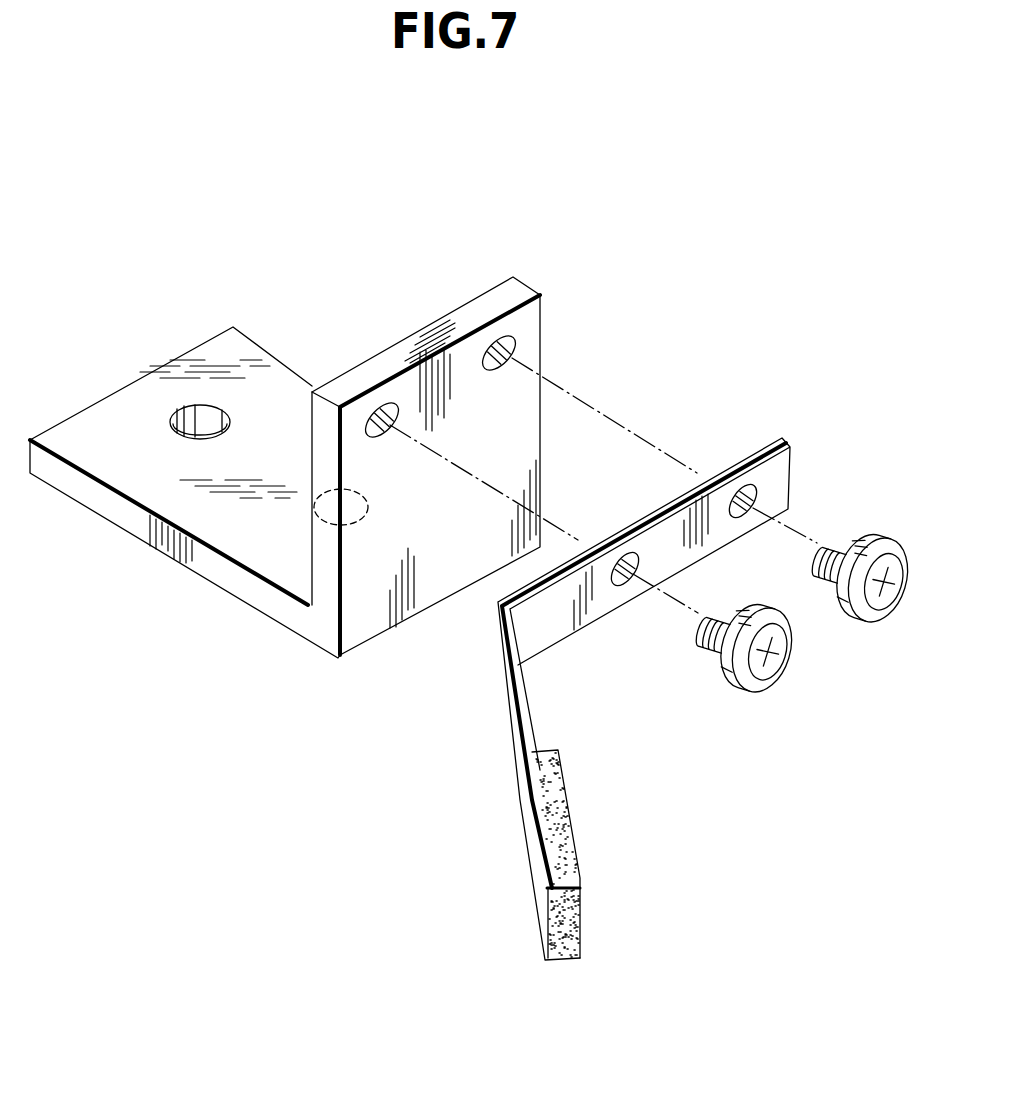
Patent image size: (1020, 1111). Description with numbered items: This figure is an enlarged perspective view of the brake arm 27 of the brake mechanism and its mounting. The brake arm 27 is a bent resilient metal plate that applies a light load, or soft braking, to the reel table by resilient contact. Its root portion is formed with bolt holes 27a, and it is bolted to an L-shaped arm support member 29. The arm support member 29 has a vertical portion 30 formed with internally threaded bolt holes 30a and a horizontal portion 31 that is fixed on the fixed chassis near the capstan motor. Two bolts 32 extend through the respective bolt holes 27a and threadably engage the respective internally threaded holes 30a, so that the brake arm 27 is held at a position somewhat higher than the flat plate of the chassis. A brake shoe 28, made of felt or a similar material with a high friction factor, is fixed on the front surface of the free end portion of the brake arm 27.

The brake arm 27 is at (502, 692).
The bolt holes 27a is at (621, 588).
The brake shoe 28 is at (567, 823).
The arm support member 29 is at (187, 568).
The vertical portion 30 is at (533, 347).
The internally threaded bolt holes 30a is at (397, 405).
The horizontal portion 31 is at (265, 358).
The bolts 32 is at (740, 680).